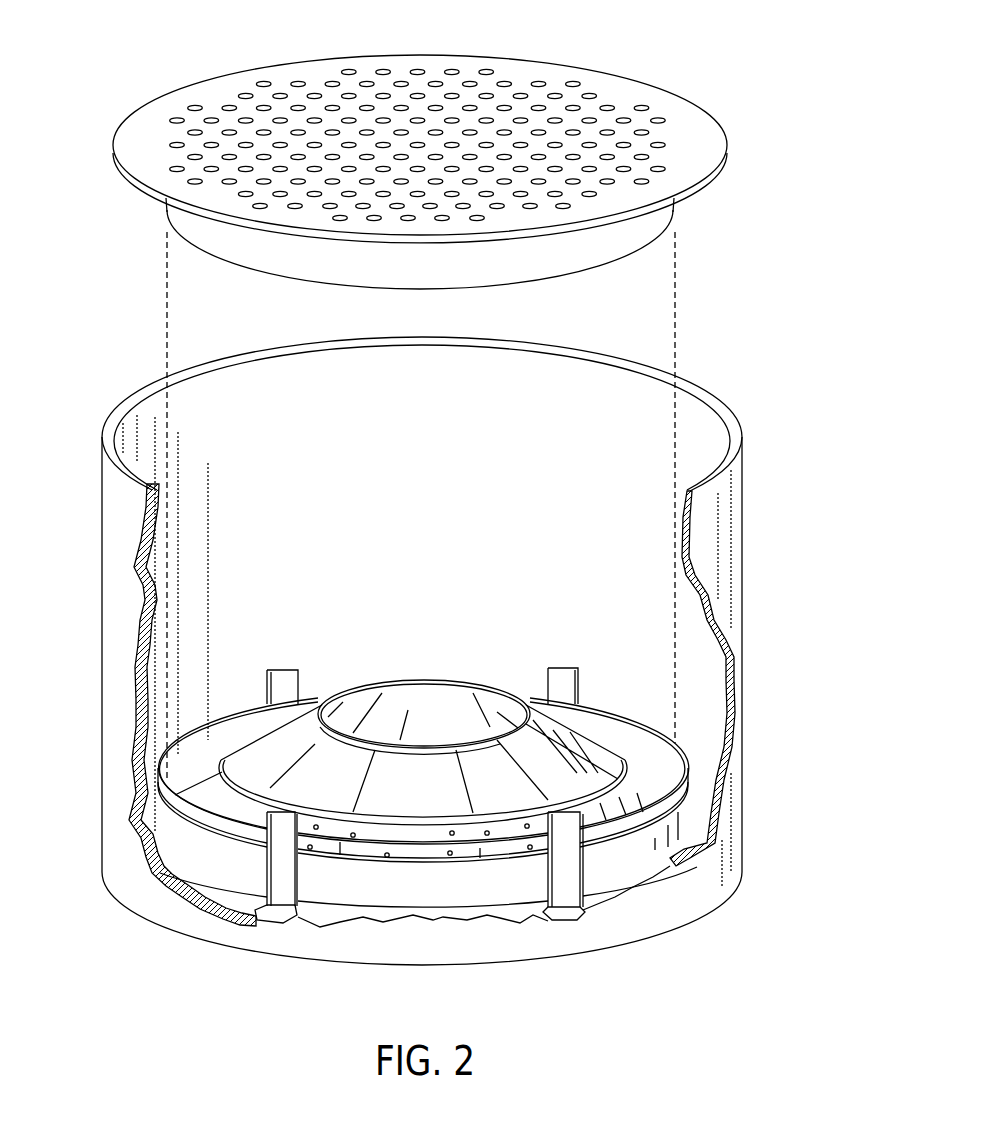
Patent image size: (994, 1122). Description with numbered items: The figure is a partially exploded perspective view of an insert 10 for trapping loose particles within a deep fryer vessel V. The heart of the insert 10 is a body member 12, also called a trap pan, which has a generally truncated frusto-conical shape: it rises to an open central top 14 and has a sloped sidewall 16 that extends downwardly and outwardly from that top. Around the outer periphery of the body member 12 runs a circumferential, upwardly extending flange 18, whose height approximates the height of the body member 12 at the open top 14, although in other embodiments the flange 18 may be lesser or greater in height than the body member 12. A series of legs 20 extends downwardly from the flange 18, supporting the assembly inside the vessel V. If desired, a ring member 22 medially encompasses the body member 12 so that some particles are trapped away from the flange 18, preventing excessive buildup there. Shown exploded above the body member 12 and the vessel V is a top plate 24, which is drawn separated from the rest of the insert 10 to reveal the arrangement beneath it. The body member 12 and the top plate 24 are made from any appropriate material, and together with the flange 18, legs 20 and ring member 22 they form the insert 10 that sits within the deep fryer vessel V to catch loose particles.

The insert 10 is at (784, 91).
The body member 12 is at (404, 661).
The open central top 14 is at (460, 698).
The sloped sidewall 16 is at (574, 748).
The circumferential flange 18 is at (700, 786).
The legs 20 is at (283, 683).
The ring member 22 is at (694, 770).
The top plate 24 is at (148, 126).
The vessel V is at (700, 407).